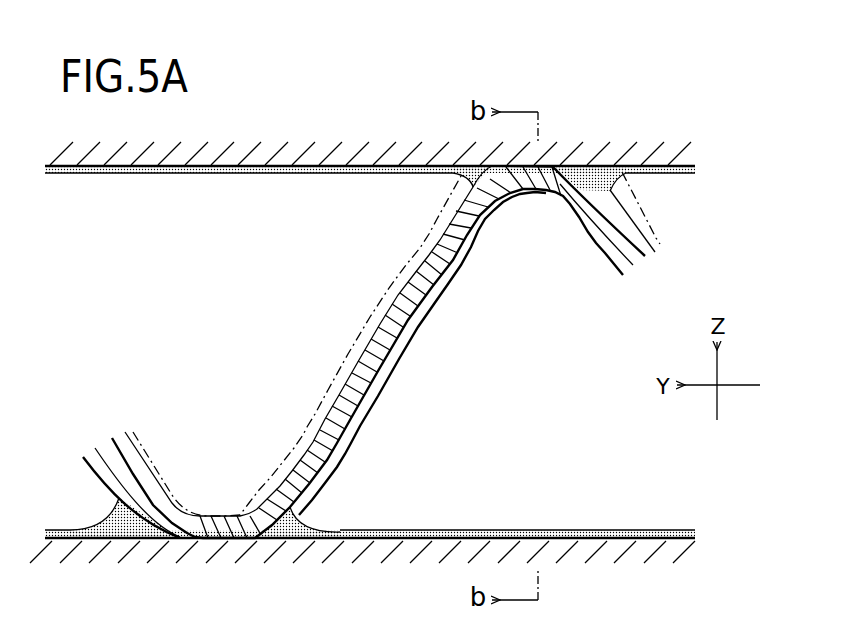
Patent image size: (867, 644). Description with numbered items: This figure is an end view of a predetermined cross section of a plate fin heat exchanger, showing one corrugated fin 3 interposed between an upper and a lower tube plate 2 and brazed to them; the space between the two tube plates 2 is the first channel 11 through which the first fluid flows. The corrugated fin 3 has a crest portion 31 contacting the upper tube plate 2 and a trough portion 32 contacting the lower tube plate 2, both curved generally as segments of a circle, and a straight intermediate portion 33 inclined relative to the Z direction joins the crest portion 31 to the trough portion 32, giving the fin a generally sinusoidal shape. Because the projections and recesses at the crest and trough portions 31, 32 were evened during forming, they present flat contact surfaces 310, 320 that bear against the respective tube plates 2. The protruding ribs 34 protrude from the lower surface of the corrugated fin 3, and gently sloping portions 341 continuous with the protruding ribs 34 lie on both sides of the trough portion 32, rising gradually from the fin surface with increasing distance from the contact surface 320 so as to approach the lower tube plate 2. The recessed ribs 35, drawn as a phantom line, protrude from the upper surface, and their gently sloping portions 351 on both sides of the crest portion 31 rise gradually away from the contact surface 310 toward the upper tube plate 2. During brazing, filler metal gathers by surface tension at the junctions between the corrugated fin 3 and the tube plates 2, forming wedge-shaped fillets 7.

The tube plate 2 is at (105, 166).
The corrugated fin 3 is at (379, 338).
The fillet 7 is at (323, 517).
The first channel 11 is at (200, 364).
The crest portion 31 is at (531, 190).
The trough portion 32 is at (212, 527).
The intermediate portion 33 is at (403, 327).
The protruding rib 34 is at (362, 420).
The recessed rib 35 is at (365, 320).
The contact surface 310 is at (547, 164).
The contact surface 320 is at (213, 540).
The gently sloping portion 341 is at (135, 540).
The gently sloping portion 351 is at (433, 182).